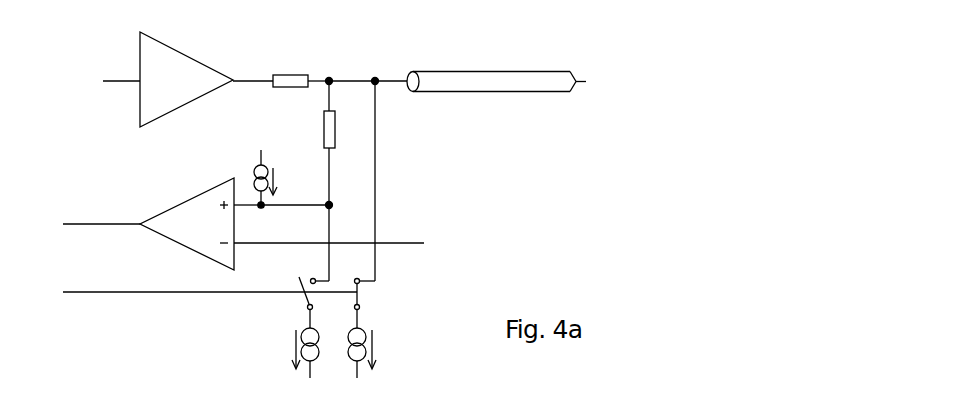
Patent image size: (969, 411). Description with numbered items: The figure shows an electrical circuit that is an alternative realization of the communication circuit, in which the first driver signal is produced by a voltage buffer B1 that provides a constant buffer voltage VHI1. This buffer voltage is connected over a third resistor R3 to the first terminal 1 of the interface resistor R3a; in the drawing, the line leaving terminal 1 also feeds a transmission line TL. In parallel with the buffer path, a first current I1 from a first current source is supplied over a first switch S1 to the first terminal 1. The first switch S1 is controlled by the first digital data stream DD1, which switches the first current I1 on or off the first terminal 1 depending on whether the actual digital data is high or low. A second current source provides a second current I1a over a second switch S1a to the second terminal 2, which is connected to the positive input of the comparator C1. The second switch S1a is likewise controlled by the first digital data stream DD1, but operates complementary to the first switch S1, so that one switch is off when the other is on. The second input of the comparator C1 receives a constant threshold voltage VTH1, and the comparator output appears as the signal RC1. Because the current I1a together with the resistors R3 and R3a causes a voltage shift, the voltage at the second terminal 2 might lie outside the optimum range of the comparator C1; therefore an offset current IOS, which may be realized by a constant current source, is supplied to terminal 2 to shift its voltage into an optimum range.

The buffer voltage VHI1 is at (93, 83).
The voltage buffer B1 is at (206, 79).
The third resistor R3 is at (301, 69).
The interface resistor R3a is at (306, 143).
The first terminal 1 is at (367, 69).
The second terminal 2 is at (306, 207).
The transmission line TL is at (496, 71).
The comparator C1 is at (282, 224).
The offset current IOS is at (280, 179).
The threshold voltage VTH1 is at (456, 244).
The comparator output signal RC1 is at (80, 225).
The first digital data stream DD1 is at (188, 293).
The second switch S1a is at (313, 292).
The first switch S1 is at (360, 292).
The second current I1a is at (289, 353).
The first current I1 is at (371, 353).